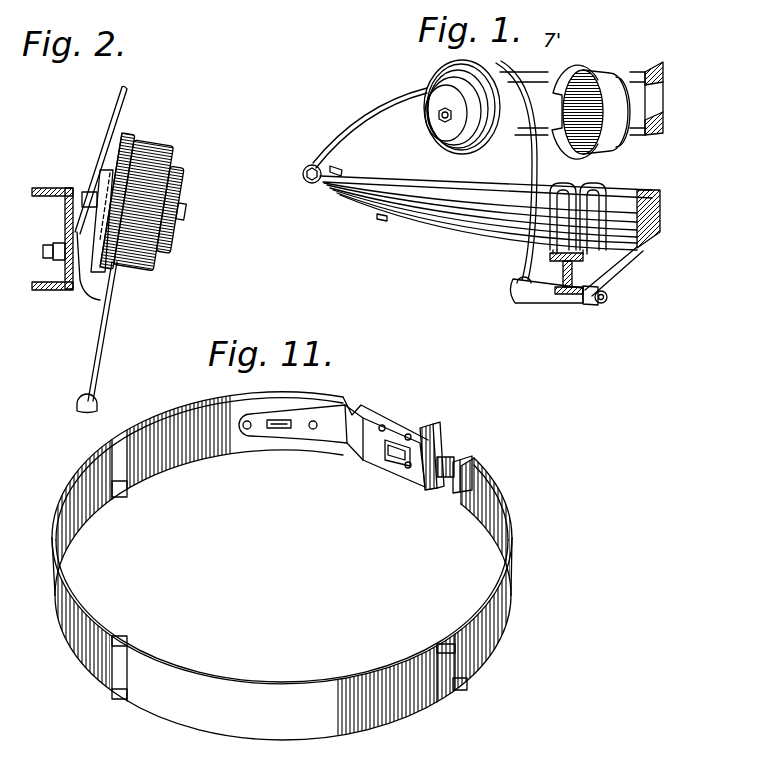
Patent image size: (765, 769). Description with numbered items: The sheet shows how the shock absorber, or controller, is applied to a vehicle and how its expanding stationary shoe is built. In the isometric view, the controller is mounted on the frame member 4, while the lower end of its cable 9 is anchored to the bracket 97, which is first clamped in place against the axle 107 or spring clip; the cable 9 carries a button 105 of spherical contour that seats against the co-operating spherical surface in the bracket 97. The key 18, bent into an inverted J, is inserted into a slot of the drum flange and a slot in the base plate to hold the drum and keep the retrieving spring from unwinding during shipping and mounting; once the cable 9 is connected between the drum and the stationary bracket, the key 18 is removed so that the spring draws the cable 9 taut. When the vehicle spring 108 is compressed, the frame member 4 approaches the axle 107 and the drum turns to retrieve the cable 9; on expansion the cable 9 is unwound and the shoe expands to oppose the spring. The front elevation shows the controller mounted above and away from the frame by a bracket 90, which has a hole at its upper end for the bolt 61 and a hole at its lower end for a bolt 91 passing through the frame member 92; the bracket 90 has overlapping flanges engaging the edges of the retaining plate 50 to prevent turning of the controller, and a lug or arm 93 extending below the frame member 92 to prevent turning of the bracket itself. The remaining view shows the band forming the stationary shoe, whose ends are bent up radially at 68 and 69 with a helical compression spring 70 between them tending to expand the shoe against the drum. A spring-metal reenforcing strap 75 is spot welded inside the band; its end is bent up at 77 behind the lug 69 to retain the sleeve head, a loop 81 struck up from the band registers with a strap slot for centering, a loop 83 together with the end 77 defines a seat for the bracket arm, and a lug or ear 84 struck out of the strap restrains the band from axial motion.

In FIG. 1, the frame member 4 is at (654, 77).
In FIG. 2, the cable 9 is at (107, 334).
In FIG. 1, the cable 9 is at (538, 178).
In FIG. 2, the key 18 is at (148, 206).
In FIG. 1, the key 18 is at (500, 138).
In FIG. 2, the retaining plate 50 is at (114, 152).
In FIG. 2, the bolt 61 is at (86, 188).
In FIG. 11, the upturned end 68 is at (457, 461).
In FIG. 11, the upturned end 69 is at (436, 432).
In FIG. 11, the helical compression spring 70 is at (447, 487).
In FIG. 11, the reenforcing strap 75 is at (327, 418).
In FIG. 11, the upturned end of strap 77 is at (428, 432).
In FIG. 11, the loop 81 is at (400, 459).
In FIG. 11, the loop 83 is at (358, 407).
In FIG. 11, the lug or ear 84 is at (387, 457).
In FIG. 2, the bracket 90 is at (97, 232).
In FIG. 2, the bolt 91 is at (43, 252).
In FIG. 2, the frame member 92 is at (44, 188).
In FIG. 2, the lug or arm 93 is at (50, 291).
In FIG. 1, the bracket 97 is at (553, 303).
In FIG. 2, the button 105 is at (80, 401).
In FIG. 1, the axle 107 is at (614, 268).
In FIG. 1, the vehicle spring 108 is at (419, 226).